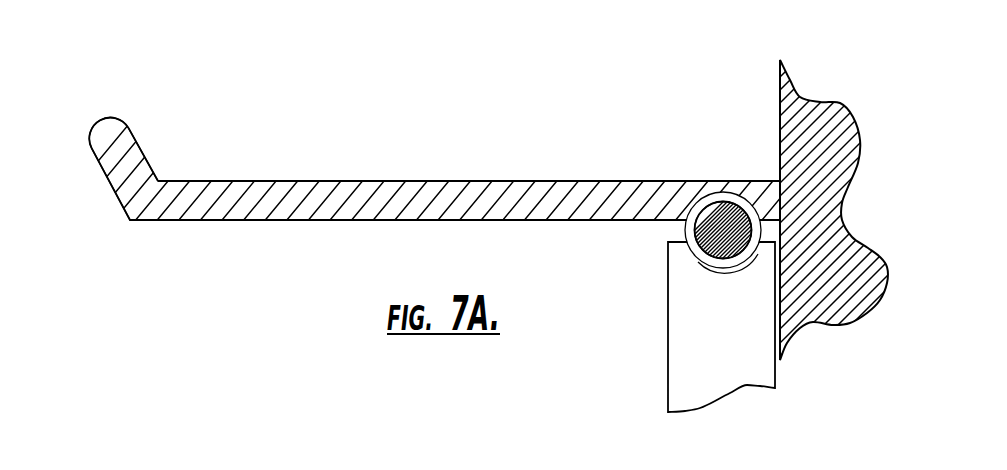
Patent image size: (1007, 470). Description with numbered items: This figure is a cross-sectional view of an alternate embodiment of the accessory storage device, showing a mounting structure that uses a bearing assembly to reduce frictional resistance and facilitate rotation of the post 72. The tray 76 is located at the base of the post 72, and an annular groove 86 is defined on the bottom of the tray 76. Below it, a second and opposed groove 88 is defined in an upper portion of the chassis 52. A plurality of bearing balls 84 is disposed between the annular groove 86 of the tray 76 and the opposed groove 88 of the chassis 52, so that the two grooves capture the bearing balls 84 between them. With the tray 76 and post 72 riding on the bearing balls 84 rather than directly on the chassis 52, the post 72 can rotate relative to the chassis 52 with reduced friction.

The chassis 52 is at (668, 362).
The post 72 is at (860, 113).
The tray 76 is at (114, 193).
The bearing balls 84 is at (705, 226).
The annular groove 86 is at (720, 192).
The second groove 88 is at (736, 268).